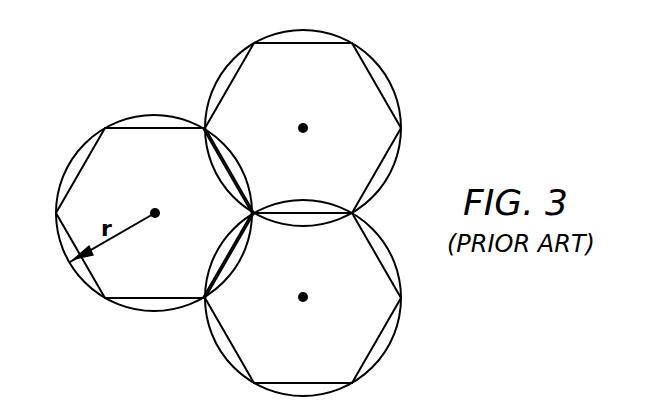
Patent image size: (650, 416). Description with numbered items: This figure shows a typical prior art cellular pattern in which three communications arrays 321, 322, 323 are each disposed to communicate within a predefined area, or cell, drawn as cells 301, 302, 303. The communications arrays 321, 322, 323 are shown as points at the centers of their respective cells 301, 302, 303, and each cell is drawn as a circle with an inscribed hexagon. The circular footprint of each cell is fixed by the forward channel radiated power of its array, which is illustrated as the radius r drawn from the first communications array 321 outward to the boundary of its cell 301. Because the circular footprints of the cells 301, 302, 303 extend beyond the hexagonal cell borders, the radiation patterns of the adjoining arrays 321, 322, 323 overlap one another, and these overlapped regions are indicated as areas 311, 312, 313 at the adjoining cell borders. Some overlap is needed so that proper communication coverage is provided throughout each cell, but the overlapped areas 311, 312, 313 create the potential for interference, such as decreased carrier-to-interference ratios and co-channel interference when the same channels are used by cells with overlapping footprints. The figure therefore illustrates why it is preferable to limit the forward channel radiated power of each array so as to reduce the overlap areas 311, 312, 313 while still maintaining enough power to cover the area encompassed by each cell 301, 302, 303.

The cell 301 is at (80, 168).
The cell 302 is at (378, 84).
The cell 303 is at (378, 343).
The overlap area 311 is at (233, 163).
The overlap area 312 is at (303, 208).
The overlap area 313 is at (232, 263).
The communications array 321 is at (155, 210).
The communications array 322 is at (303, 124).
The communications array 323 is at (303, 294).